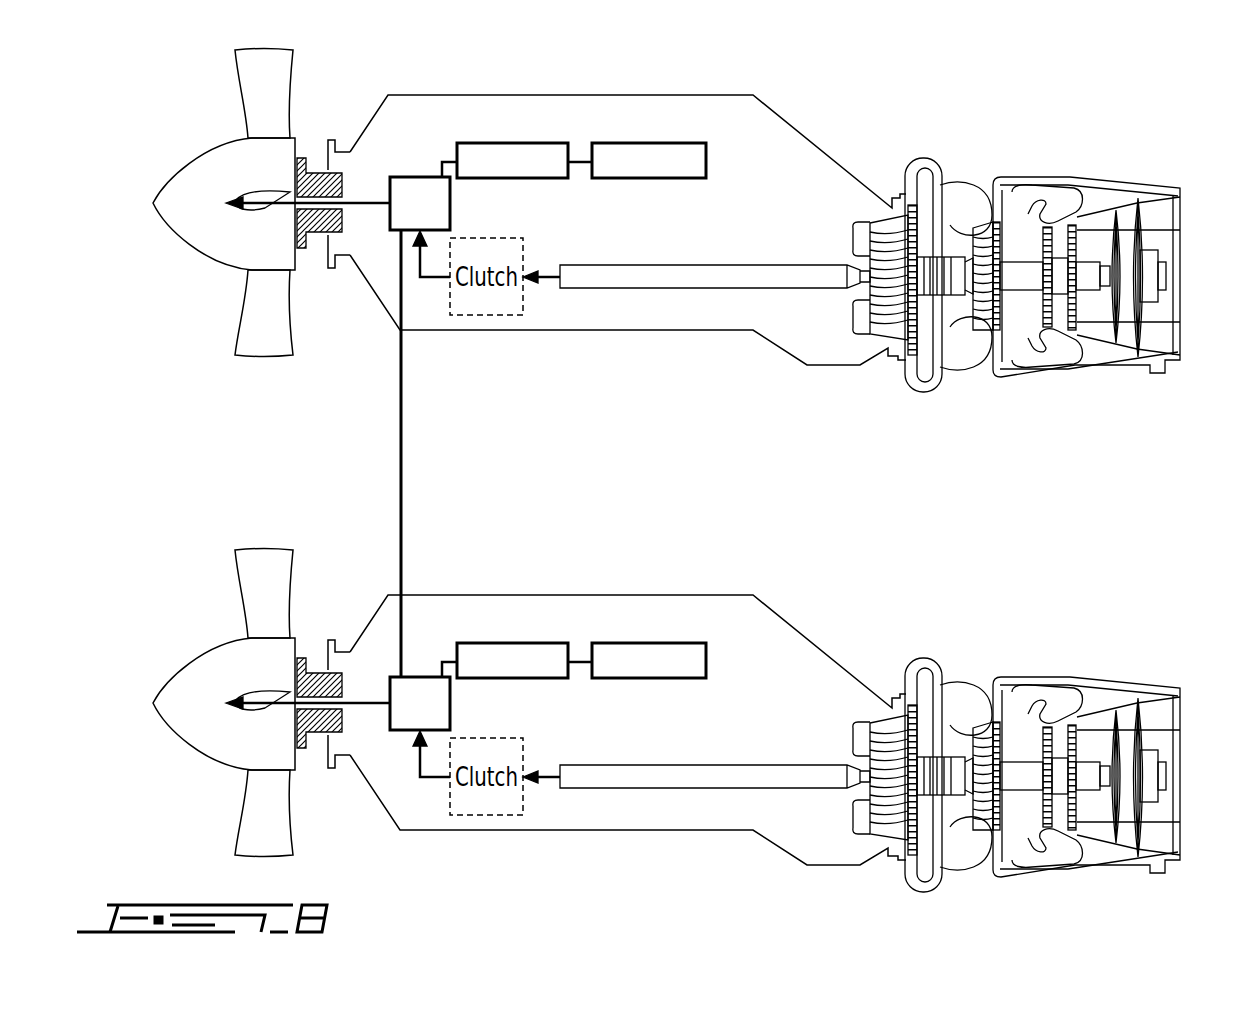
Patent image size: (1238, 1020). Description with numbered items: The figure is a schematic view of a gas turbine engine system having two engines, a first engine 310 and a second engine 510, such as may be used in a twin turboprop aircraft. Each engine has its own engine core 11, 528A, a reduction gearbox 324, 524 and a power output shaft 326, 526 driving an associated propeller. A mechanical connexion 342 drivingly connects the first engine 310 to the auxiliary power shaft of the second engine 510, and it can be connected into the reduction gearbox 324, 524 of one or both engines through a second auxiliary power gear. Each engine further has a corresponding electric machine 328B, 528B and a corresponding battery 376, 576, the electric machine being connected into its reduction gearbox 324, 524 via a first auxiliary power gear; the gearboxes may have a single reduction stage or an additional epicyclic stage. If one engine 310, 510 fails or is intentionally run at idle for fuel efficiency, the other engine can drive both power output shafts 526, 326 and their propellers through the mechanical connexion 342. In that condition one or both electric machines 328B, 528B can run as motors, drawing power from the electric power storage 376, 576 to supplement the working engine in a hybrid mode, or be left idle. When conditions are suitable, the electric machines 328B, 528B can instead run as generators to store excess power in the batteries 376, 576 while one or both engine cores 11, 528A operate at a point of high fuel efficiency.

The second engine 510 is at (876, 97).
The power output shaft 526 is at (317, 173).
The reduction gearbox 524 is at (412, 177).
The electric machine 528B is at (532, 157).
The battery 576 is at (651, 157).
The engine core 528A is at (1148, 170).
The mechanical connexion 342 is at (401, 465).
The first engine 310 is at (878, 597).
The power output shaft 326 is at (337, 673).
The reduction gearbox 324 is at (412, 677).
The electric machine 328B is at (532, 657).
The battery 376 is at (651, 657).
The engine core 11 is at (1148, 670).